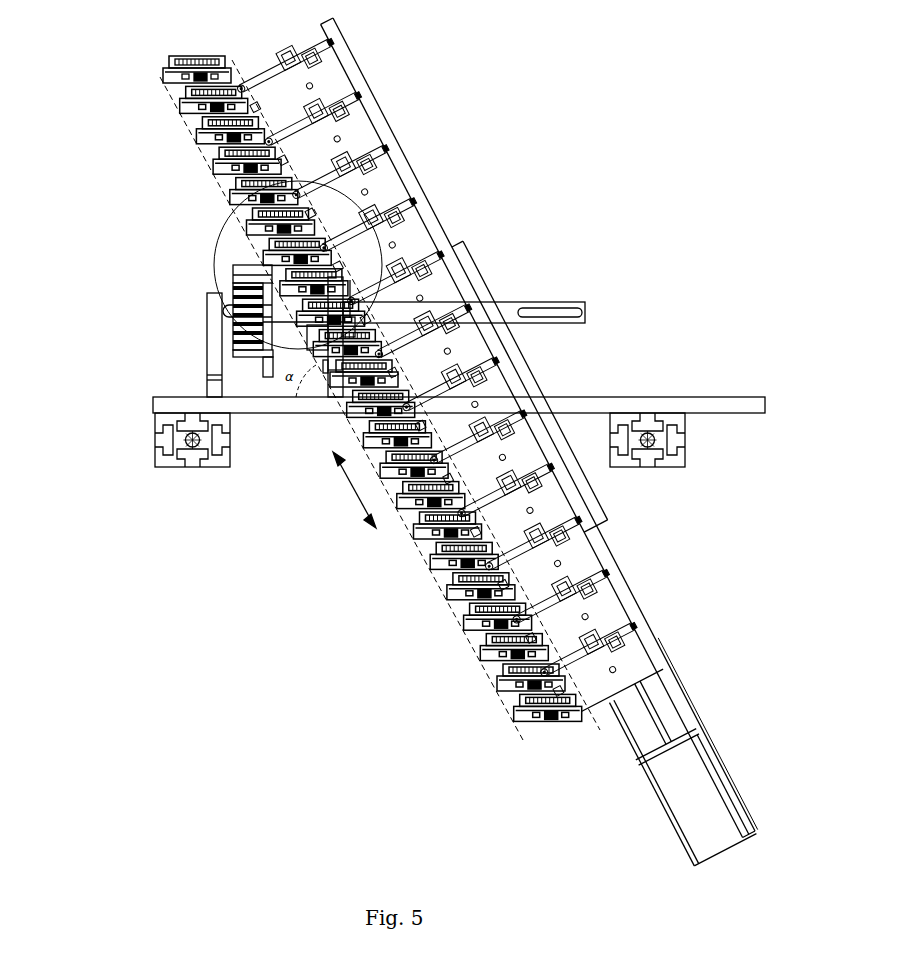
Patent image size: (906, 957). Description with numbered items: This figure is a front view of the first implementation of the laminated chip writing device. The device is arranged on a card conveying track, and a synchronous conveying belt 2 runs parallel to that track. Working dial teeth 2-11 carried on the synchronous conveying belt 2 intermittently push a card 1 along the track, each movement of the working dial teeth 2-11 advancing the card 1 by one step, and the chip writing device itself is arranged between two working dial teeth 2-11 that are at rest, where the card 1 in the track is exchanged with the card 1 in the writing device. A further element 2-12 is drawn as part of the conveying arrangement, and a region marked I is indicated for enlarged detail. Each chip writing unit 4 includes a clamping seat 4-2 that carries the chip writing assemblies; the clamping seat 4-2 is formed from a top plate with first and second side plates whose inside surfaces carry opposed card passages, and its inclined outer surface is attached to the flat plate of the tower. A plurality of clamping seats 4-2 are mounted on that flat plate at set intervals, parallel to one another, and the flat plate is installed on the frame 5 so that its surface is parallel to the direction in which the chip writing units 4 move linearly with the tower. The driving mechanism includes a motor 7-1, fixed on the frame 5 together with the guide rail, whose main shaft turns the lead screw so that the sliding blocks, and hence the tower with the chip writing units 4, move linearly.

The card 1 is at (182, 90).
The synchronous conveying belt 2 is at (329, 281).
The working dial teeth 2-11 is at (240, 230).
The rack 2-12 is at (273, 372).
The chip writing unit 4 is at (128, 60).
The clamping seat 4-2 is at (160, 78).
The frame 5 is at (151, 399).
The motor 7-1 is at (680, 785).
The detail region I is at (380, 158).